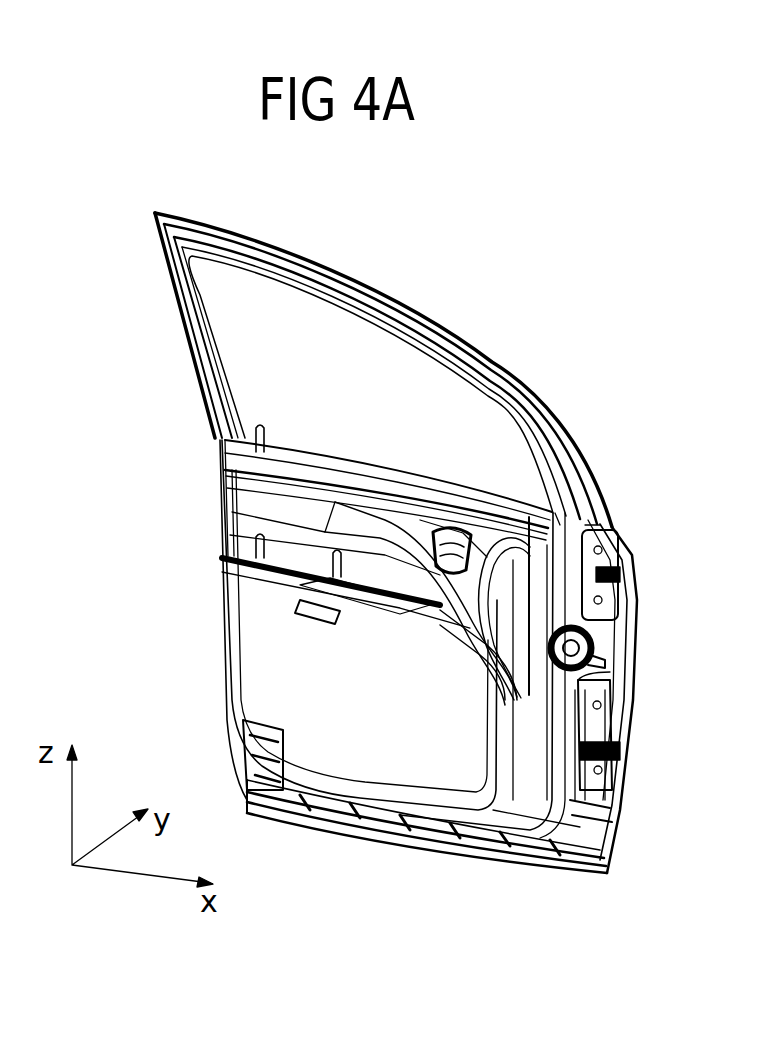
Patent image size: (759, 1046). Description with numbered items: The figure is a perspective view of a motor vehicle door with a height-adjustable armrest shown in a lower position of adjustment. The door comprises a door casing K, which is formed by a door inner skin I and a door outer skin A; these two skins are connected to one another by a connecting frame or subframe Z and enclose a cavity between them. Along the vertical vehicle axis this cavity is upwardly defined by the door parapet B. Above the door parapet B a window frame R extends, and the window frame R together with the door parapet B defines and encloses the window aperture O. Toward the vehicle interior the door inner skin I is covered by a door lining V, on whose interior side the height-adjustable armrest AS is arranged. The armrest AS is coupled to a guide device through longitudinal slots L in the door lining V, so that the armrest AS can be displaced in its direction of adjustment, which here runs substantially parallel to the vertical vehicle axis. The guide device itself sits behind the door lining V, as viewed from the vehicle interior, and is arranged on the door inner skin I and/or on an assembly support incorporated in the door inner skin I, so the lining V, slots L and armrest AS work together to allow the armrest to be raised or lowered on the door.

The window aperture O is at (383, 328).
The window frame R is at (497, 362).
The door parapet B is at (468, 490).
The door outer skin A is at (637, 588).
The door casing K is at (590, 663).
The connecting frame or subframe Z is at (566, 730).
The door inner skin I is at (617, 836).
The door lining V is at (258, 695).
The longitudinal slots L is at (333, 556).
The height-adjustable armrest AS is at (232, 575).